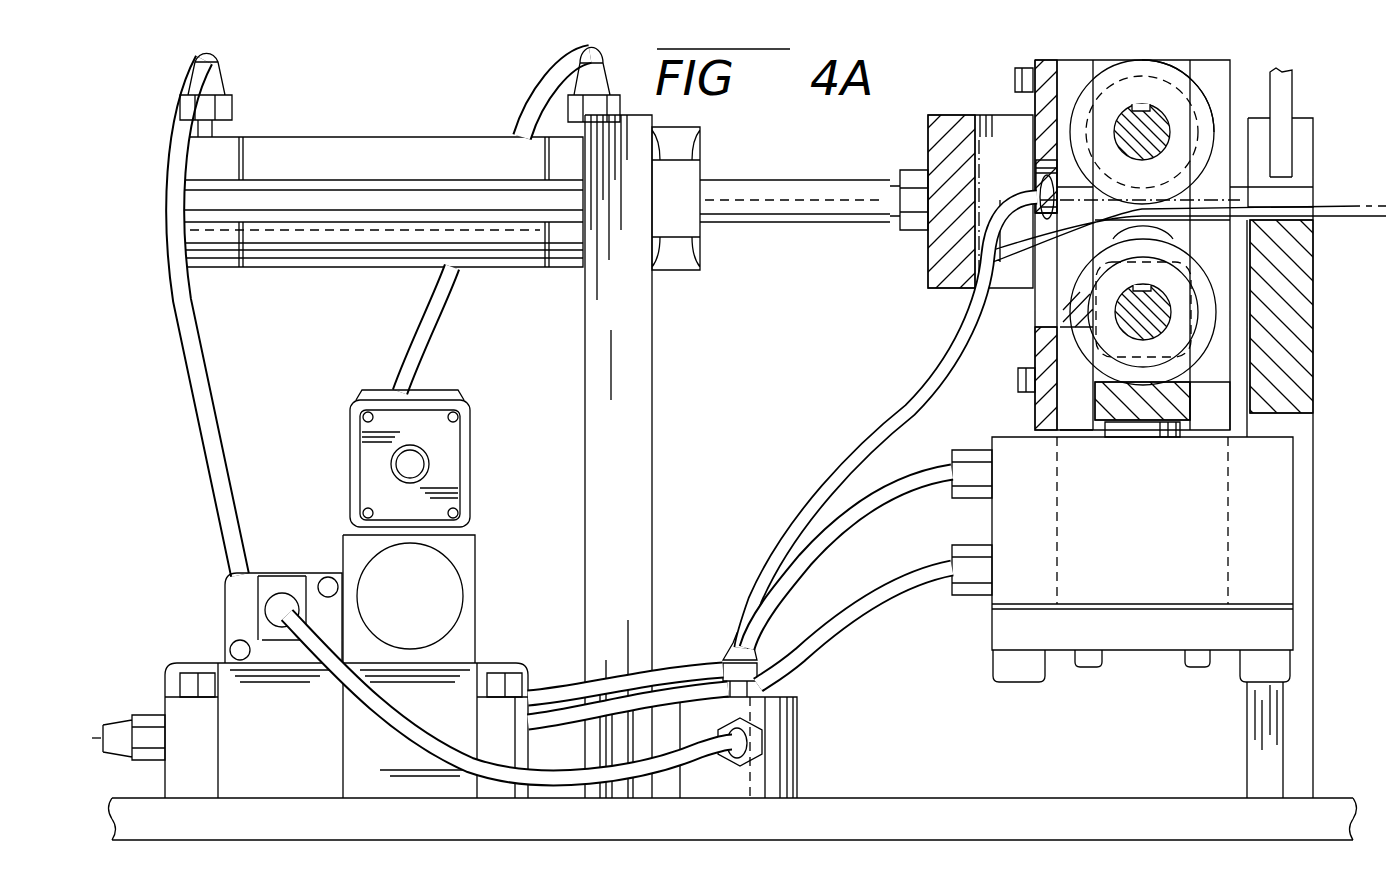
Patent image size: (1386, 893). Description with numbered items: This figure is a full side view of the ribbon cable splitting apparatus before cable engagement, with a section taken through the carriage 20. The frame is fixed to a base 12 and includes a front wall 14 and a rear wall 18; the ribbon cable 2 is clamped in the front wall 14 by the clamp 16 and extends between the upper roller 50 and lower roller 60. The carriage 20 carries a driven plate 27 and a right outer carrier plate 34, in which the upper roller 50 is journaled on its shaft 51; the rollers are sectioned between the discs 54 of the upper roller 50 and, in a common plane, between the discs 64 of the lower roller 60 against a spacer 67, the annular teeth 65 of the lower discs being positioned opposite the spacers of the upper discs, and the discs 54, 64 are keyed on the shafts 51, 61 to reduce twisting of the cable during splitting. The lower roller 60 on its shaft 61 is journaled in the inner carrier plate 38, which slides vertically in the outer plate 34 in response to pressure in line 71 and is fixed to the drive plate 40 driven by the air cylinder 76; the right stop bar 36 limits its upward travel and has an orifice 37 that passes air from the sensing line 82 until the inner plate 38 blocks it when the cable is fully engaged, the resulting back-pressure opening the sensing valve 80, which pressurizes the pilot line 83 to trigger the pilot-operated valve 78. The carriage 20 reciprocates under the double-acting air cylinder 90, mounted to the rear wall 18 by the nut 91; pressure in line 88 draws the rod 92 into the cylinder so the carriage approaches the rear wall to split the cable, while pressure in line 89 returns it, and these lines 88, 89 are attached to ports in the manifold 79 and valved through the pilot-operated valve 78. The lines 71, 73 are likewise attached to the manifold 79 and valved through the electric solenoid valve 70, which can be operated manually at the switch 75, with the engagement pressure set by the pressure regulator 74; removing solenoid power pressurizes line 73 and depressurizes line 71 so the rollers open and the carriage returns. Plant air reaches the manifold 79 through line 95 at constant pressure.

The ribbon cable 2 is at (1022, 213).
The base 12 is at (1316, 810).
The front wall 14 is at (1300, 707).
The hinged clamp 16 is at (1287, 103).
The rear wall 18 is at (650, 442).
The carriage 20 is at (1033, 60).
The driven plate 27 is at (930, 265).
The right outer carrier plate 34 is at (1062, 356).
The right stop bar 36 is at (1297, 184).
The orifice 37 is at (1036, 172).
The right side inner carrier plate 38 is at (1192, 380).
The drive plate 40 is at (1080, 410).
The upper roller 50 is at (1170, 62).
The shaft 51 is at (1140, 104).
The discs 54 is at (1187, 84).
The lower roller 60 is at (1222, 292).
The shaft 61 is at (1120, 316).
The discs 64 is at (1248, 264).
The annular teeth 65 is at (1212, 302).
The spacers 67 is at (1188, 318).
The electric solenoid valve 70 is at (448, 488).
The line 71 is at (862, 632).
The line 73 is at (803, 566).
The pressure regulator 74 is at (466, 566).
The switch 75 is at (415, 463).
The air cylinder 76 is at (1286, 500).
The pilot-operated valve 78 is at (1132, 437).
The manifold 79 is at (275, 734).
The sensing valve 80 is at (797, 733).
The sensing line 82 is at (790, 518).
The pilot line 83 is at (413, 722).
The line 88 is at (440, 303).
The line 89 is at (205, 353).
The double-acting air cylinder 90 is at (425, 150).
The nut 91 is at (703, 262).
The rod 92 is at (844, 185).
The line 95 is at (118, 727).